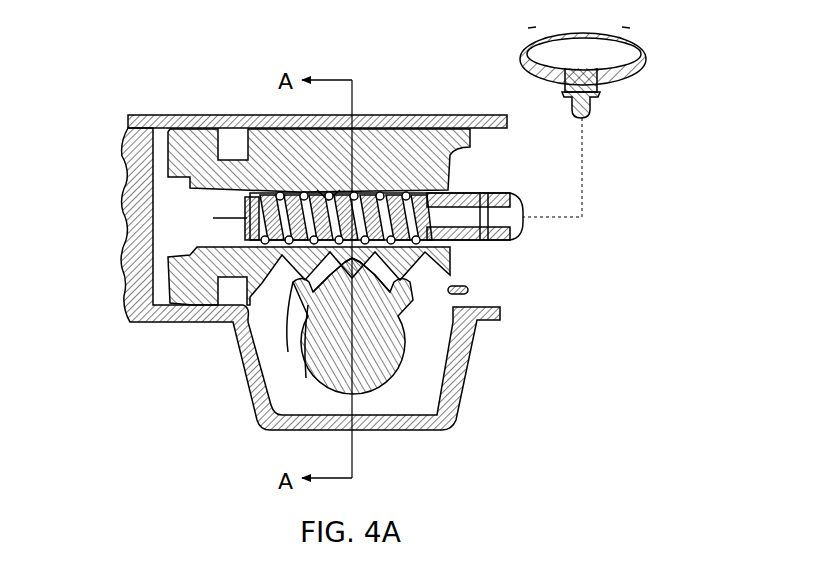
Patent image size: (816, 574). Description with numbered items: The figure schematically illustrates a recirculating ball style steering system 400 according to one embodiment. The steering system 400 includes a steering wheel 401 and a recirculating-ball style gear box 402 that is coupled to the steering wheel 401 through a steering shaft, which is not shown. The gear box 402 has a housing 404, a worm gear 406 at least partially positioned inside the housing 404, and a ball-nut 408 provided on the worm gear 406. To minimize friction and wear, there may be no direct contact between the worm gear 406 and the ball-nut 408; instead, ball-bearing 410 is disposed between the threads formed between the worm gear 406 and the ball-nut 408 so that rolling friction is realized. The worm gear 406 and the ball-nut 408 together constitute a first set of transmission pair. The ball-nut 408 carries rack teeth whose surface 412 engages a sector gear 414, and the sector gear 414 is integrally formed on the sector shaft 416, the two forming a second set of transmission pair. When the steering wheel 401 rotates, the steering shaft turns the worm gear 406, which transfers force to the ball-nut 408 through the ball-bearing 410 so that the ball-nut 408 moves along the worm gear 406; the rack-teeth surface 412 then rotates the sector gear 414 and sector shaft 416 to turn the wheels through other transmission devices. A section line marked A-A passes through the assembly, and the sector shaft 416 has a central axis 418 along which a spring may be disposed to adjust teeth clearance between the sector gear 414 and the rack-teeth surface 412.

The recirculating ball style steering system 400 is at (641, 186).
The steering wheel 401 is at (519, 60).
The recirculating-ball style gear box 402 is at (143, 112).
The housing 404 is at (123, 278).
The worm gear 406 is at (487, 240).
The ball-nut 408 is at (474, 147).
The ball-bearing 410 is at (317, 190).
The surface of the rack teeth 412 is at (383, 268).
The sector gear 414 is at (313, 370).
The sector shaft 416 is at (347, 340).
The central axis 418 is at (363, 360).